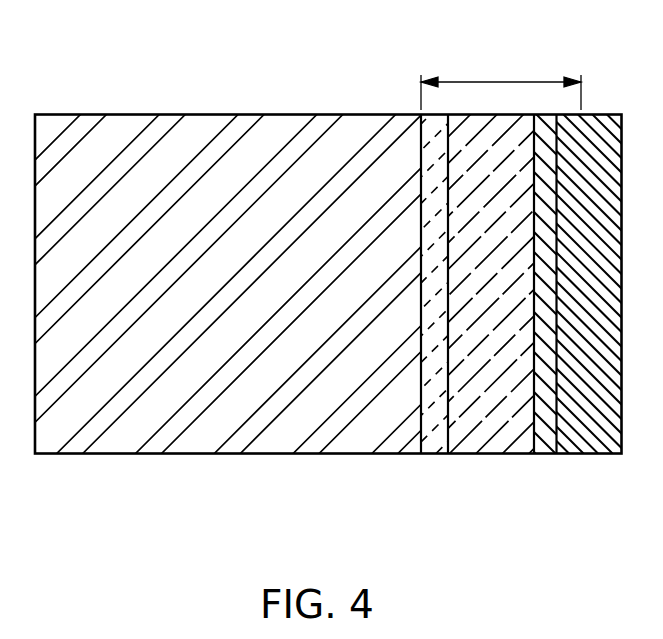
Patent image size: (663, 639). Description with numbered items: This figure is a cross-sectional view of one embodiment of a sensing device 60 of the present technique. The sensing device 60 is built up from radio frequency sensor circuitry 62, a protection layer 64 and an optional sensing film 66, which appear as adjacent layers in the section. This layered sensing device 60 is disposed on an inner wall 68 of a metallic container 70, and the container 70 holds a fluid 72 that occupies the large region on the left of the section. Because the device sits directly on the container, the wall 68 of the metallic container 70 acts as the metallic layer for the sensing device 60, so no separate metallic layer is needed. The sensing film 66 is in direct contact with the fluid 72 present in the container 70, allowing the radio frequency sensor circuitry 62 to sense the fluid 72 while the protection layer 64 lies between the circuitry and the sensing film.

The sensing device 60 is at (505, 82).
The radio frequency sensor circuitry 62 is at (488, 455).
The protection layer 64 is at (543, 455).
The sensing film 66 is at (433, 455).
The inner wall 68 is at (602, 455).
The metallic container 70 is at (228, 455).
The fluid 72 is at (187, 127).